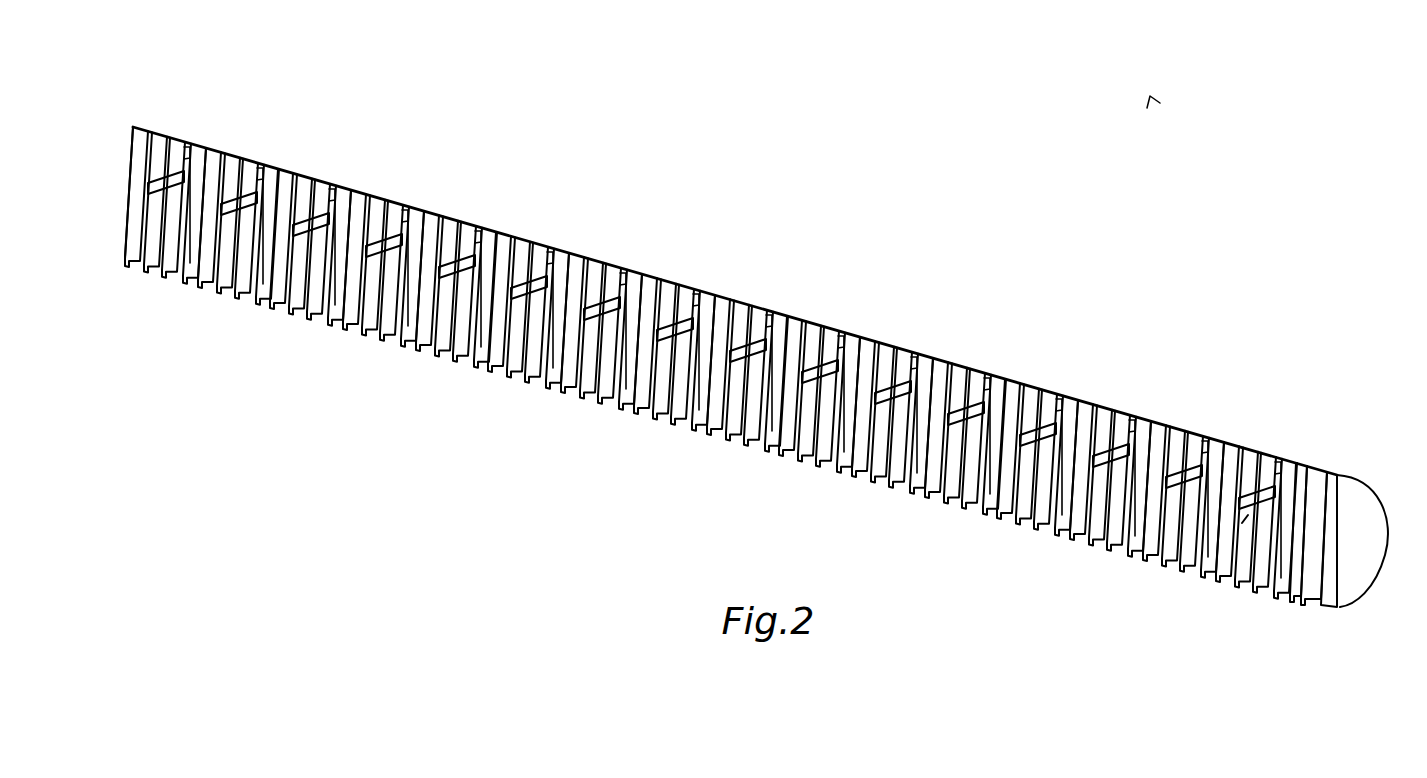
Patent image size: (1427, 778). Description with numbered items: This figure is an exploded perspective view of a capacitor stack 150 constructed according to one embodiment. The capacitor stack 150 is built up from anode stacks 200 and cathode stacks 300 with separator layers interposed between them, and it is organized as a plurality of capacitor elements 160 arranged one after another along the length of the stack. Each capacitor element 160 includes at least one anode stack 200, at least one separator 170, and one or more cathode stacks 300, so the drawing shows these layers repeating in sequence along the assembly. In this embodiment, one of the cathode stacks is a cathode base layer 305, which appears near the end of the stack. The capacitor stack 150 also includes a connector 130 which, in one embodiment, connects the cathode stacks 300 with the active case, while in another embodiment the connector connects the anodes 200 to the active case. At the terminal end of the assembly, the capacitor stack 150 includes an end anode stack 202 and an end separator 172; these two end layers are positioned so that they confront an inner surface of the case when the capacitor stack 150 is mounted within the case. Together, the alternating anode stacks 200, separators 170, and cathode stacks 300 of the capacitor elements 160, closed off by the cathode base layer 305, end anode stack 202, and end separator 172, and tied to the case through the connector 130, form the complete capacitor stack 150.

The connector 130 is at (1248, 515).
The capacitor stack 150 is at (1147, 107).
The capacitor element 160 is at (735, 377).
The separator 170 is at (745, 340).
The end separator 172 is at (1380, 496).
The anode stack 200 is at (726, 293).
The end anode stack 202 is at (758, 330).
The cathode stack 300 is at (740, 319).
The cathode base layer 305 is at (1300, 468).